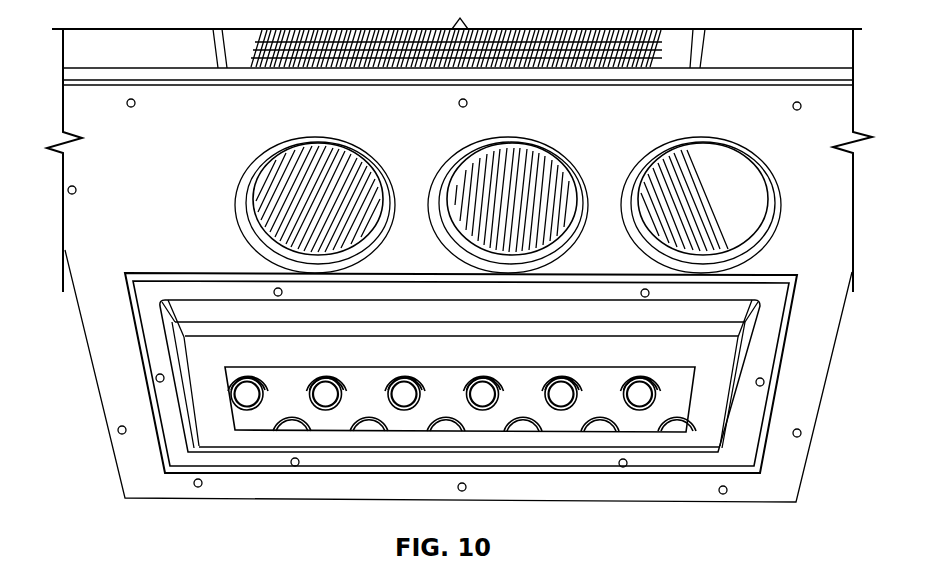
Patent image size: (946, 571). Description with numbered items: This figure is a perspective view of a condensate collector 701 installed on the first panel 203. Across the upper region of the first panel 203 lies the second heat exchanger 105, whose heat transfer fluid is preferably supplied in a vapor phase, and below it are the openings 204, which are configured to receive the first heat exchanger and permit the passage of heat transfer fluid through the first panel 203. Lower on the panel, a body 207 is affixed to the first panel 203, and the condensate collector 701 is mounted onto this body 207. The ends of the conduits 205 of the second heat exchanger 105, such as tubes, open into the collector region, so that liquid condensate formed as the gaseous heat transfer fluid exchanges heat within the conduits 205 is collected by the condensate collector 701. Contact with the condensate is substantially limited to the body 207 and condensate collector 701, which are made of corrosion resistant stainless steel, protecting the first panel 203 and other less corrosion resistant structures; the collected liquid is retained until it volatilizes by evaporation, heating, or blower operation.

The second heat exchanger 105 is at (650, 65).
The first panel 203 is at (93, 278).
The openings 204 is at (267, 165).
The conduits 205 is at (487, 402).
The body 207 is at (167, 470).
The condensate collector 701 is at (237, 440).